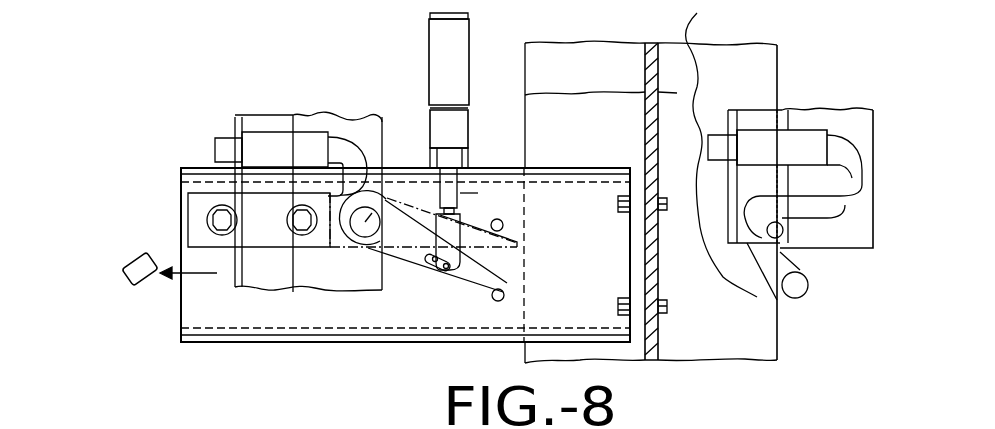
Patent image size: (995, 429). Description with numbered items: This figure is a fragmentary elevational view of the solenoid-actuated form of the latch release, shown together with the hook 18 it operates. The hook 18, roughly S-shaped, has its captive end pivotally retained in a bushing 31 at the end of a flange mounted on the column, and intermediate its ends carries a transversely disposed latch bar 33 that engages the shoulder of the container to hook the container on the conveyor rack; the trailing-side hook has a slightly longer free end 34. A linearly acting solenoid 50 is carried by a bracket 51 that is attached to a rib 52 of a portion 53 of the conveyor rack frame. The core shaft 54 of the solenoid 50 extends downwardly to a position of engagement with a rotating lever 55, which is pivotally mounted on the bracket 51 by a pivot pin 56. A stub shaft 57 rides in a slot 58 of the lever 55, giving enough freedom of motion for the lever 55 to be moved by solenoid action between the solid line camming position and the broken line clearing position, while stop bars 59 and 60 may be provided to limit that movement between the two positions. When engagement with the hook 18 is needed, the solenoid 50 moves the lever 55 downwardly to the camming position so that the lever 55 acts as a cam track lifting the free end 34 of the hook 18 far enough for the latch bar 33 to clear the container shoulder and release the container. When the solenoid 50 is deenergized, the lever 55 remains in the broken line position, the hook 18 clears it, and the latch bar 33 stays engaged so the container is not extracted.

The hook 18 is at (775, 327).
The bushing 31 is at (798, 142).
The latch bar 33 is at (818, 255).
The free end 34 is at (797, 285).
The solenoid 50 is at (440, 50).
The bracket 51 is at (305, 282).
The rib 52 is at (677, 103).
The portion of the conveyor rack frame 53 is at (573, 52).
The core shaft 54 is at (462, 193).
The rotating lever 55 is at (386, 247).
The pivot pin 56 is at (352, 232).
The stub shaft 57 is at (488, 282).
The slot 58 is at (437, 267).
The stop bar 59 is at (503, 226).
The stop bar 60 is at (498, 295).